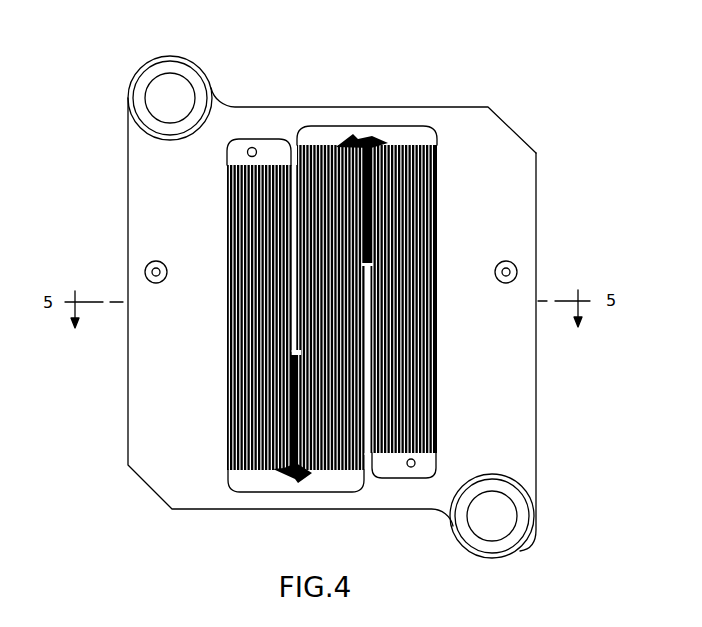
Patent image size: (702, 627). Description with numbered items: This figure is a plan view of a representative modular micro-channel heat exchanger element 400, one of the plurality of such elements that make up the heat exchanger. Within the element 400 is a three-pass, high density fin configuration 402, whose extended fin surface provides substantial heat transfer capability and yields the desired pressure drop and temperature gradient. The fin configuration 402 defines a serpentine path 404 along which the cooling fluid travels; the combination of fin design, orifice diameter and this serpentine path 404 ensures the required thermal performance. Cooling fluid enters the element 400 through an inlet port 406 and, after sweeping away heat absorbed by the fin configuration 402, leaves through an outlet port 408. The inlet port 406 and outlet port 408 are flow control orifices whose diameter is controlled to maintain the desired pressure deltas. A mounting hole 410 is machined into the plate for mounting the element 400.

The micro-channel heat exchanger element 400 is at (469, 103).
The fin configuration 402 is at (437, 262).
The serpentine path 404 is at (410, 289).
The inlet port 406 is at (251, 148).
The outlet port 408 is at (410, 467).
The mounting hole 410 is at (488, 521).